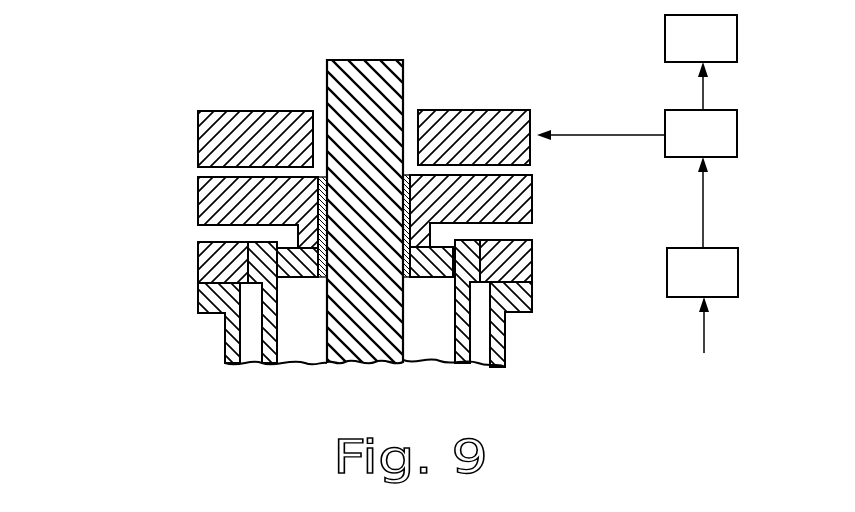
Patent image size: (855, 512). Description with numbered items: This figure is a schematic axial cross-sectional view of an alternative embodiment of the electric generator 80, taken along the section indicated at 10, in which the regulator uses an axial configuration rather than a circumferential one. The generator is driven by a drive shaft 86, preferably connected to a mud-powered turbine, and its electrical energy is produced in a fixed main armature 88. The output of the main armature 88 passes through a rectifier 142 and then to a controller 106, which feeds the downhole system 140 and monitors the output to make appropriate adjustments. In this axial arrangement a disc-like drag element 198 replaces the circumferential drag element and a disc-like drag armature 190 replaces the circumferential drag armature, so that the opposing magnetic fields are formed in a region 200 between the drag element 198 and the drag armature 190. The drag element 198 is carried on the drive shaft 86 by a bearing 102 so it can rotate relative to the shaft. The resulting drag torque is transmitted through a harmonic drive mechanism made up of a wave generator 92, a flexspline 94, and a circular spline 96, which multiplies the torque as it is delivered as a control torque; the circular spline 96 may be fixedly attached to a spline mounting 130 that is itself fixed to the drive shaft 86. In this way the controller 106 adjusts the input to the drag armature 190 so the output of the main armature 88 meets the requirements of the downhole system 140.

The section line 10 is at (190, 233).
The electric generator 80 is at (158, 340).
The drive shaft 86 is at (403, 90).
The main armature 88 is at (703, 359).
The wave generator 92 is at (295, 272).
The flexspline 94 is at (452, 328).
The circular spline 96 is at (532, 257).
The bearing 102 is at (323, 175).
The controller 106 is at (720, 146).
The spline mounting 130 is at (500, 337).
The downhole system 140 is at (720, 51).
The rectifier 142 is at (722, 284).
The drag armature 190 is at (198, 140).
The drag element 198 is at (532, 199).
The region 200 is at (188, 173).